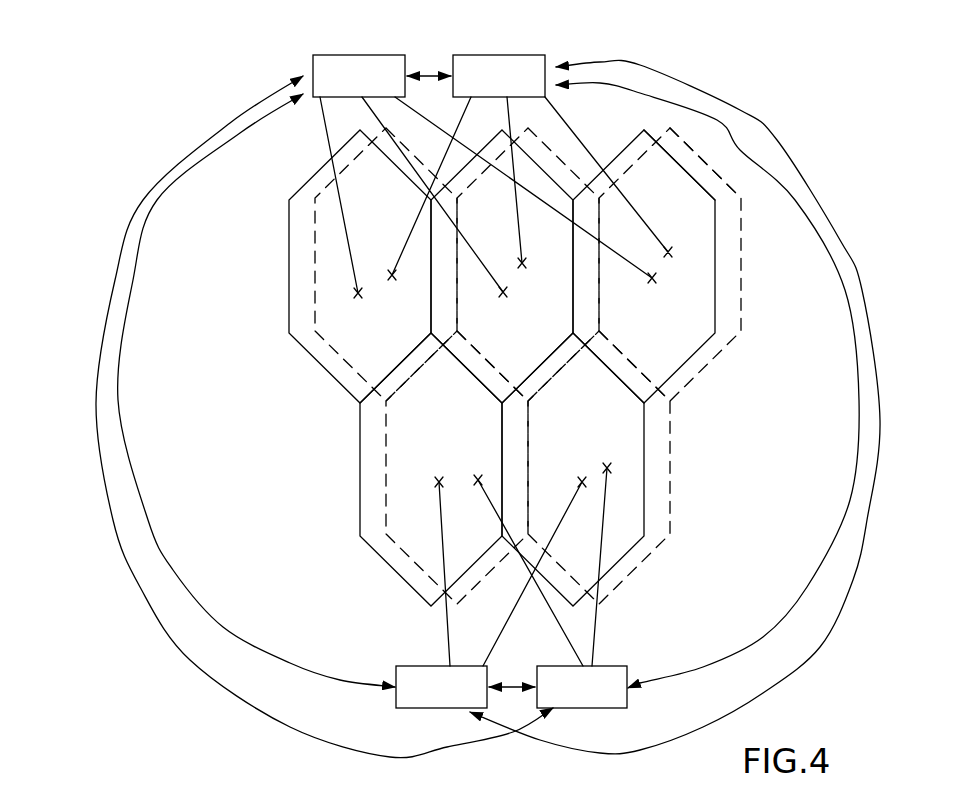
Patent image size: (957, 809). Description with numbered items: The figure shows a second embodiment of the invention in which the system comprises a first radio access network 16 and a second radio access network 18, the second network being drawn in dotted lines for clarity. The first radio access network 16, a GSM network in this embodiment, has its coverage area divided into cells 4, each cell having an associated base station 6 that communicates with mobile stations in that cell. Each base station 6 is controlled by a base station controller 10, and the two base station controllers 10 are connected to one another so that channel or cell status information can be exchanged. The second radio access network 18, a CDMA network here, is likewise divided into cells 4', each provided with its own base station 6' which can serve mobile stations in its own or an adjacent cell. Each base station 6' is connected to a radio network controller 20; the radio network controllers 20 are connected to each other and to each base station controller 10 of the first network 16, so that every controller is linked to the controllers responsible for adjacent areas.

The cell 4 is at (496, 355).
The cell 4' is at (550, 351).
The base station 6 is at (517, 380).
The base station 6' is at (548, 345).
The base station controller 10 is at (341, 56).
The radio network controller 20 is at (485, 56).
The first radio access network 16 is at (672, 157).
The second radio access network 18 is at (713, 178).